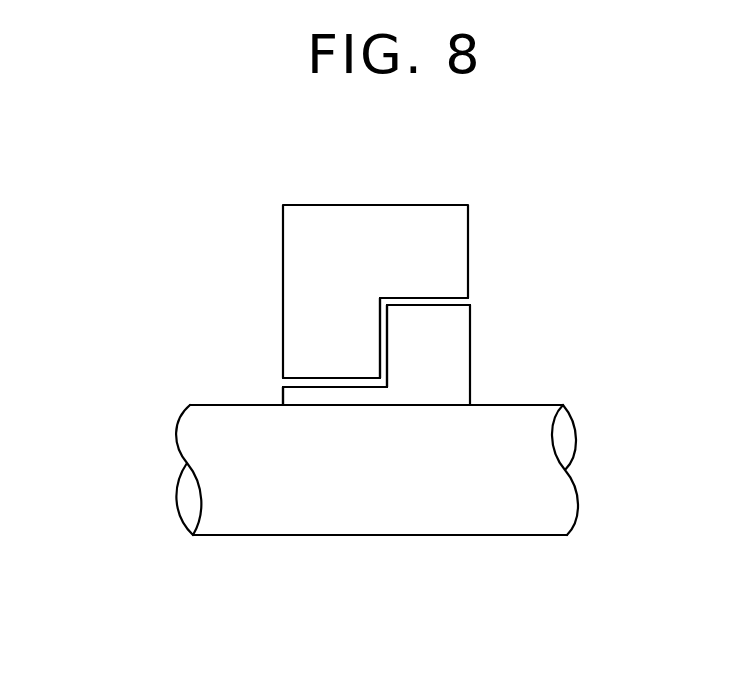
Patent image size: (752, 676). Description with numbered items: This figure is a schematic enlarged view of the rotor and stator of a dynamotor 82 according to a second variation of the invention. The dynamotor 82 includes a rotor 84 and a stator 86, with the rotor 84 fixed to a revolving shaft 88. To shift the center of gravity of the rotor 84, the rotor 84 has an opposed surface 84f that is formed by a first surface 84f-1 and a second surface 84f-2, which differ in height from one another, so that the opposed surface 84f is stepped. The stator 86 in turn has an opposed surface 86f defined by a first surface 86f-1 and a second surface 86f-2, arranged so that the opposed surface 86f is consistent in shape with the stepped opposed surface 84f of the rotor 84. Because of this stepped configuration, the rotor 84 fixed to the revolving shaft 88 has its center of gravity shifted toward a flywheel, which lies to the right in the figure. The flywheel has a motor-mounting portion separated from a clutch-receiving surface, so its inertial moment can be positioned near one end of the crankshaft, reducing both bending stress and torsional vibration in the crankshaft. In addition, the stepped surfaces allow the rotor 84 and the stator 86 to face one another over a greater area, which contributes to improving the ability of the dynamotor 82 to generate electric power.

The dynamotor 82 is at (540, 201).
The rotor 84 is at (460, 357).
The opposed surface of the rotor 84f is at (398, 290).
The first surface of the rotor opposed surface 84f-1 is at (437, 303).
The second surface of the rotor opposed surface 84f-2 is at (325, 387).
The stator 86 is at (293, 253).
The opposed surface of the stator 86f is at (358, 398).
The first surface of the stator opposed surface 86f-1 is at (422, 303).
The second surface of the stator opposed surface 86f-2 is at (305, 380).
The revolving shaft 88 is at (527, 467).